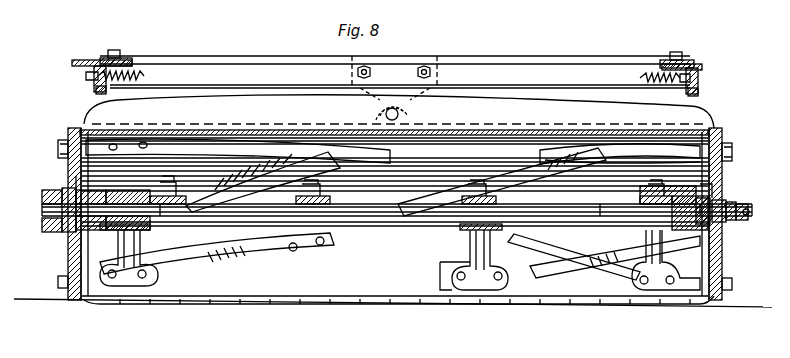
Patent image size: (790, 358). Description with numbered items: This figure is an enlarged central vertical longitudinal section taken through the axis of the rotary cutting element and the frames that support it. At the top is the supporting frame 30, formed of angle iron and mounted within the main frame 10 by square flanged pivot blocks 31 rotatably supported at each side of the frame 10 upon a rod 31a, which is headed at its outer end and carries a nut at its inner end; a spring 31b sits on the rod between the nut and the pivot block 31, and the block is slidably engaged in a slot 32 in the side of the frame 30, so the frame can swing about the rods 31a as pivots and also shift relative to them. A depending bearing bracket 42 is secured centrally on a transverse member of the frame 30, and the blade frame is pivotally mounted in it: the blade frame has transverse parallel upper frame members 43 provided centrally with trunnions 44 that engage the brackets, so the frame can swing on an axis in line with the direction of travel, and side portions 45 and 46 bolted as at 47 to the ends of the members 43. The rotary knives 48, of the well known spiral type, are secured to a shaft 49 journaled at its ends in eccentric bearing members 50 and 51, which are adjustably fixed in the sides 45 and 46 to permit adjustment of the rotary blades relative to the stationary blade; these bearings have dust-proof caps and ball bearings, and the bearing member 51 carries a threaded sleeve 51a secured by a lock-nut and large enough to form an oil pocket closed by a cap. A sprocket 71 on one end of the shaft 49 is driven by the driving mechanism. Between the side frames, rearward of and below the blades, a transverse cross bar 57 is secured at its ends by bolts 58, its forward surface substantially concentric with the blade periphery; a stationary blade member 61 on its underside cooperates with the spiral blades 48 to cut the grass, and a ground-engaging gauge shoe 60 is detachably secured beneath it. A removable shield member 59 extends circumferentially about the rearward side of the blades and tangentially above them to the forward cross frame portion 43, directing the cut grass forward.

The frame 10 is at (80, 60).
The supporting frame 30 is at (126, 60).
The pivot block 31 is at (106, 86).
The rod 31a is at (124, 86).
The spring 31b is at (146, 76).
The slot 32 is at (96, 92).
The bearing bracket 42 is at (382, 88).
The upper frame member 43 is at (270, 106).
The trunnion 44 is at (400, 114).
The side portion 45 is at (68, 262).
The side portion 46 is at (722, 264).
The bolt 47 is at (60, 142).
The rotary knife 48 is at (227, 264).
The shaft 49 is at (420, 220).
The eccentric bearing member 50 is at (66, 176).
The eccentric bearing member 51 is at (708, 192).
The sleeve 51a is at (732, 200).
The cross bar 57 is at (586, 300).
The bolt 58 is at (58, 282).
The shield member 59 is at (516, 128).
The gauge shoe 60 is at (440, 304).
The stationary blade member 61 is at (504, 306).
The sprocket 71 is at (44, 194).